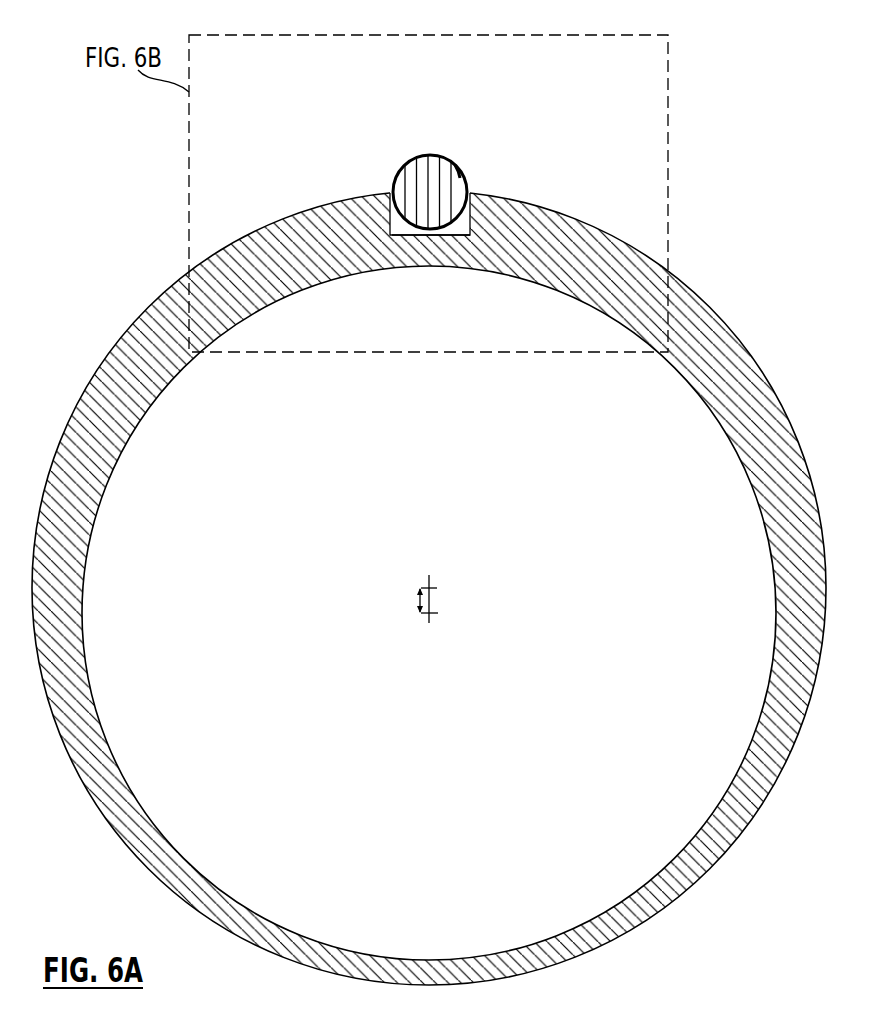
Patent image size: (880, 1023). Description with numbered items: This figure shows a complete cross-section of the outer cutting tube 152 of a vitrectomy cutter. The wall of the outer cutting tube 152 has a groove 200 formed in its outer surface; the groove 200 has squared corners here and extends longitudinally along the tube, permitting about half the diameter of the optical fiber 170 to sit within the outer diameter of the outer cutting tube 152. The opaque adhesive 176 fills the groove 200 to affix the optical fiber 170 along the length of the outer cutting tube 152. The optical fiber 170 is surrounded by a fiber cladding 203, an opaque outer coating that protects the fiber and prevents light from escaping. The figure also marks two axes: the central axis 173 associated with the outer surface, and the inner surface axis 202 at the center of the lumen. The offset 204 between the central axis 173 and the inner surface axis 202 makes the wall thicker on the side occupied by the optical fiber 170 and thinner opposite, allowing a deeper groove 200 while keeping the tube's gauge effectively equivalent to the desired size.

The outer cutting tube 152 is at (726, 325).
The optical fiber 170 is at (437, 162).
The central axis 173 is at (437, 588).
The opaque adhesive 176 is at (396, 238).
The groove 200 is at (468, 238).
The inner surface axis 202 is at (437, 614).
The fiber cladding 203 is at (465, 178).
The offset 204 is at (418, 600).